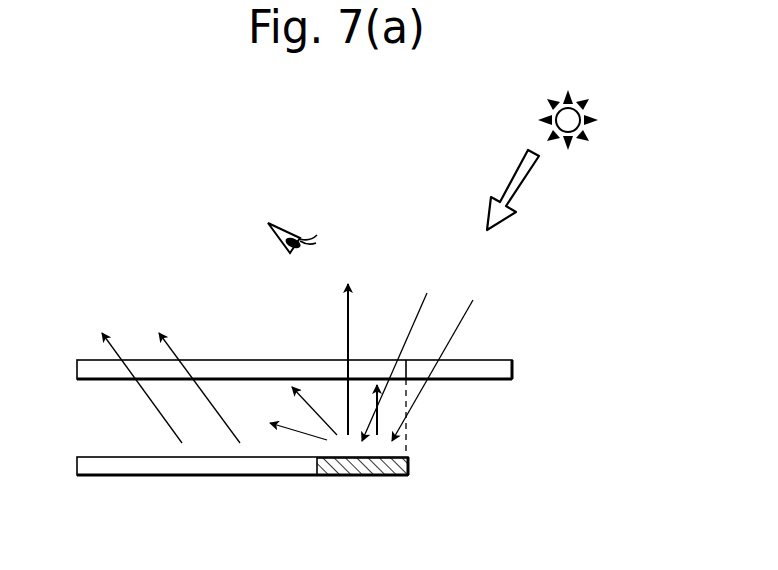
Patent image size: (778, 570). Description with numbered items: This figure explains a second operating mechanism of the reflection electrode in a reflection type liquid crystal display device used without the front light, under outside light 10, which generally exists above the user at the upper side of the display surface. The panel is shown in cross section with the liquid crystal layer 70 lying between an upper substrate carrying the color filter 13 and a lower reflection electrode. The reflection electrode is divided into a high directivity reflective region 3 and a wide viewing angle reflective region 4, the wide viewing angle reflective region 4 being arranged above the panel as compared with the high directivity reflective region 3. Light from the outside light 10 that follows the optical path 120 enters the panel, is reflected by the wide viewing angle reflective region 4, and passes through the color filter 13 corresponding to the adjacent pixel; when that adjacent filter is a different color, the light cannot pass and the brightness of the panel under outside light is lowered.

The outside light 10 is at (506, 184).
The optical path 120 is at (490, 283).
The color filter 13 is at (500, 366).
The liquid crystal layer 70 is at (294, 427).
The high directivity reflective region 3 is at (173, 478).
The wide viewing angle reflective region 4 is at (366, 478).